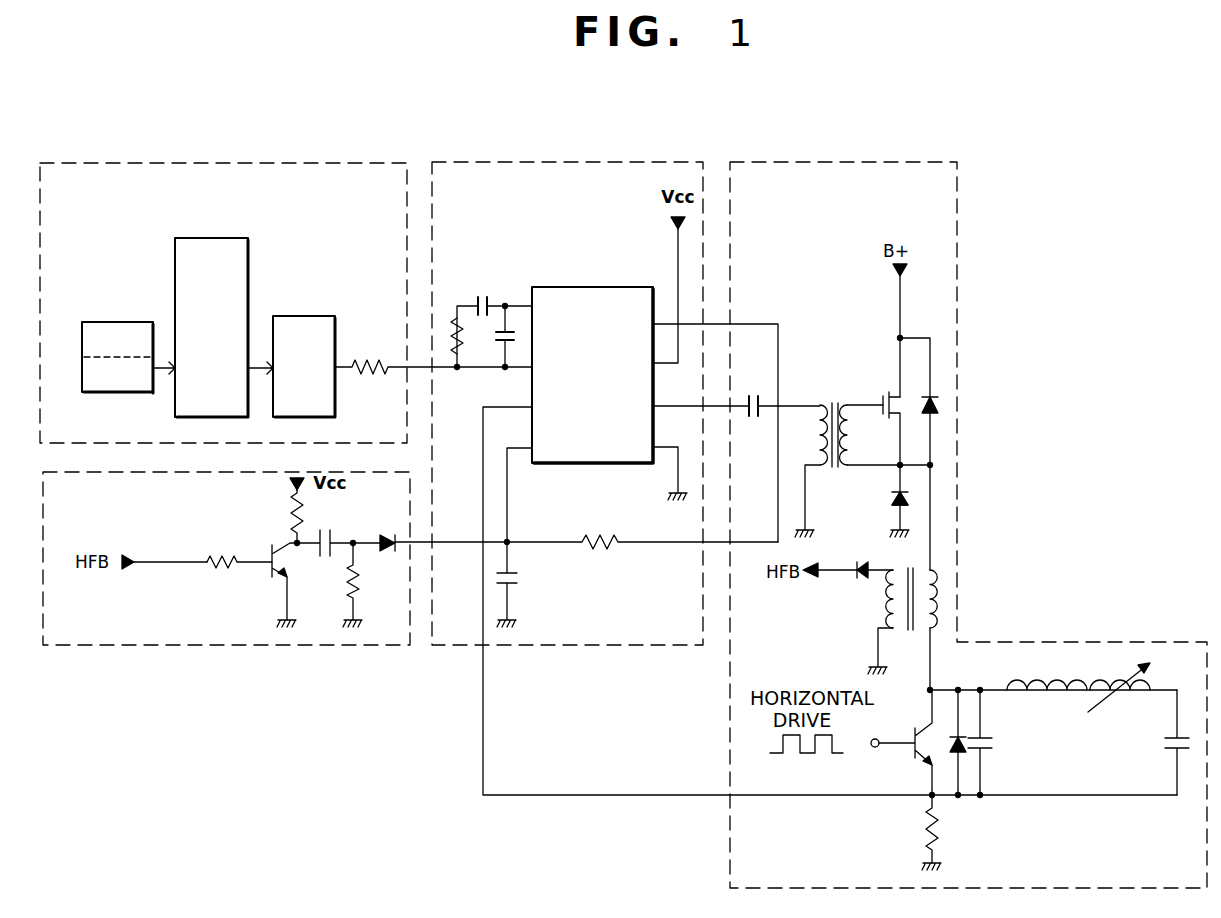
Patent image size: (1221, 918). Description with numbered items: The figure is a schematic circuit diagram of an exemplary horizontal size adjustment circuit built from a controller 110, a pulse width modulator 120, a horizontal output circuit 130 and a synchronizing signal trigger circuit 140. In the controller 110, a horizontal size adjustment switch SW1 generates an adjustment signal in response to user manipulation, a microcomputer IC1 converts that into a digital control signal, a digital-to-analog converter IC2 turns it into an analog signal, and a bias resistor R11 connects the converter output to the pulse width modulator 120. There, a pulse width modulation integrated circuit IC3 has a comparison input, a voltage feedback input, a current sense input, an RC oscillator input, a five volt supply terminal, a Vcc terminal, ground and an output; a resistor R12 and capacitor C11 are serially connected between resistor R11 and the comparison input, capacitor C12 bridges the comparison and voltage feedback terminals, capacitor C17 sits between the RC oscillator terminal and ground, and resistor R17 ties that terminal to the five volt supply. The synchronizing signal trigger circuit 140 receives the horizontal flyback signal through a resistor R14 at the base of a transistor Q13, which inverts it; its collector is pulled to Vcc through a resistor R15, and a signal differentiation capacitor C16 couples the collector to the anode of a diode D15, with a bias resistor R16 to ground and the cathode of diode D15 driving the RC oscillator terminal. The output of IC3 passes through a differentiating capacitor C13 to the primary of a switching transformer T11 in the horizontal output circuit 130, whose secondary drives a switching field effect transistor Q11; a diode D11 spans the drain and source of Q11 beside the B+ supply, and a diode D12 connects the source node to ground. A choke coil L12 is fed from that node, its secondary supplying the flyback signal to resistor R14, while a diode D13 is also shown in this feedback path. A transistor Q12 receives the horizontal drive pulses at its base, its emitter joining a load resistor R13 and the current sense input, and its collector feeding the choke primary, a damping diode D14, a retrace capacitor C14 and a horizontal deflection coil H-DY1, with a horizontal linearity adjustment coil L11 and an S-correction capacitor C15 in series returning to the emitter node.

The controller 110 is at (390, 162).
The pulse width modulator 120 is at (684, 162).
The horizontal output circuit 130 is at (940, 160).
The synchronizing signal trigger circuit 140 is at (390, 648).
The horizontal size adjustment switch SW1 is at (122, 322).
The microcomputer IC1 is at (203, 238).
The digital-to-analog converter IC2 is at (307, 316).
The pulse width modulation integrated circuit IC3 is at (576, 286).
The bias resistor R11 is at (396, 355).
The resistor R12 is at (475, 336).
The load resistor R13 is at (949, 832).
The resistor R14 is at (239, 551).
The resistor R15 is at (278, 510).
The bias resistor R16 is at (369, 585).
The resistor R17 is at (586, 529).
The capacitor C11 is at (478, 293).
The capacitor C12 is at (489, 347).
The differentiating capacitor C13 is at (777, 394).
The retrace capacitor C14 is at (997, 742).
The S-correction capacitor C15 is at (1159, 742).
The signal differentiation capacitor C16 is at (325, 532).
The capacitor C17 is at (525, 584).
The diode D11 is at (951, 430).
The diode D12 is at (880, 501).
The diode D13 is at (841, 582).
The damping diode D14 is at (943, 742).
The diode D15 is at (378, 530).
The switching field effect transistor Q11 is at (904, 428).
The transistor Q12 is at (901, 742).
The transistor Q13 is at (293, 585).
The switching transformer T11 is at (862, 458).
The horizontal linearity adjustment coil L11 is at (1119, 688).
The choke coil L12 is at (902, 609).
The horizontal deflection coil H-DY1 is at (1047, 675).